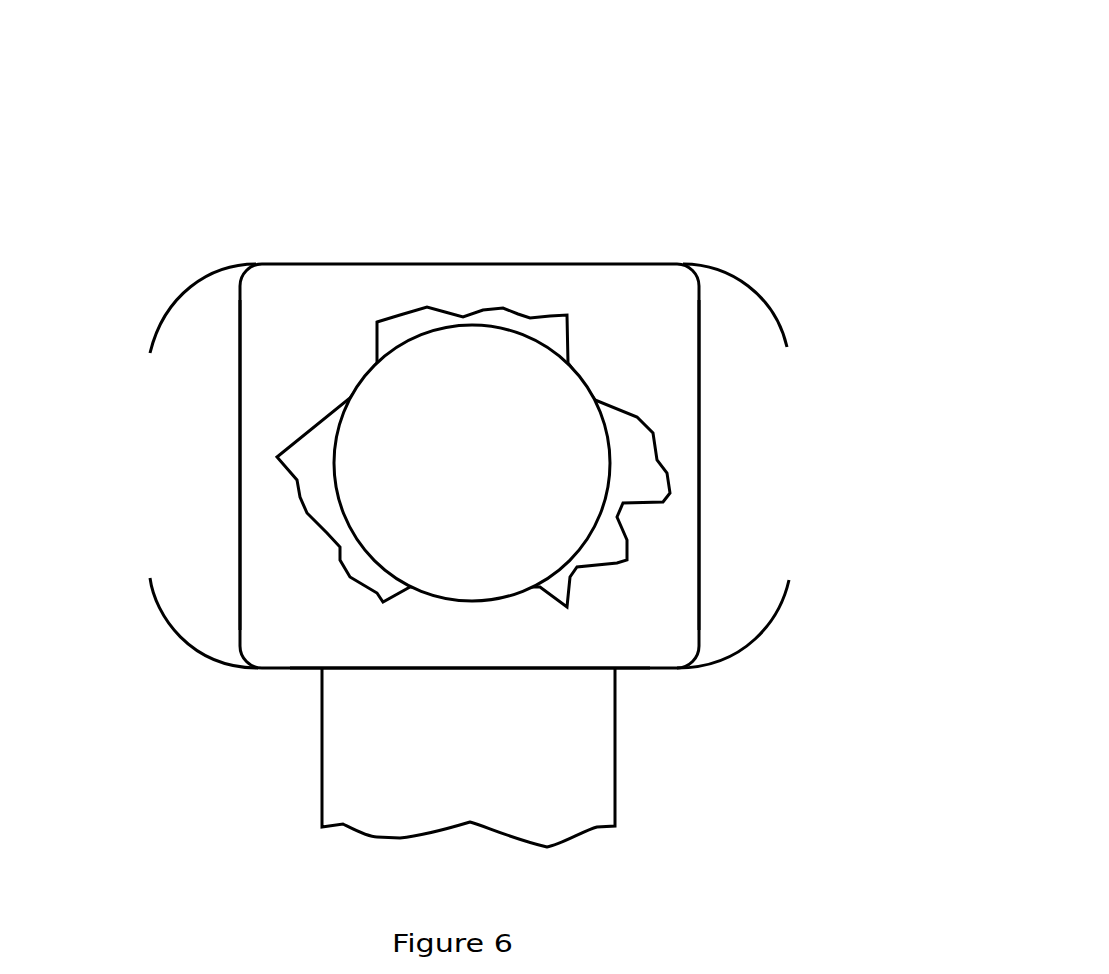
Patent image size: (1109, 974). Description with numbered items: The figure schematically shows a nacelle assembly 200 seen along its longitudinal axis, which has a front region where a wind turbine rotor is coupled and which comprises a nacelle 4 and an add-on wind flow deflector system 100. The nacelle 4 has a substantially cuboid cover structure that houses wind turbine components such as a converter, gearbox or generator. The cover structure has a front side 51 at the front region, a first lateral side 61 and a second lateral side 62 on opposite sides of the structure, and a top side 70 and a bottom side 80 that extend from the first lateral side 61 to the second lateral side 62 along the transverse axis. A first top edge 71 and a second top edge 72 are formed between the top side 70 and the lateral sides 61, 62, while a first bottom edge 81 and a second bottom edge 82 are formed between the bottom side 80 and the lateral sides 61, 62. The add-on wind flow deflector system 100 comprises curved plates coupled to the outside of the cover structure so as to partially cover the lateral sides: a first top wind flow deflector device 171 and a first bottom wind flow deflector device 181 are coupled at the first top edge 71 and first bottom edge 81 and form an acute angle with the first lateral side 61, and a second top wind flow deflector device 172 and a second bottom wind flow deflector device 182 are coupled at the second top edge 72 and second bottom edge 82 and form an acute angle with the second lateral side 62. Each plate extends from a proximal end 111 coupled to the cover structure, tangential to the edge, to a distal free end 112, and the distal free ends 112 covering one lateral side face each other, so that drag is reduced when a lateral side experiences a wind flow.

The nacelle 4 is at (495, 728).
The front side 51 is at (420, 657).
The first lateral side 61 is at (240, 518).
The second lateral side 62 is at (702, 478).
The top side 70 is at (460, 263).
The first top edge 71 is at (278, 287).
The second top edge 72 is at (676, 293).
The bottom side 80 is at (440, 670).
The first bottom edge 81 is at (273, 640).
The second bottom edge 82 is at (665, 648).
The add-on wind flow deflector system 100 is at (110, 264).
The proximal end 111 is at (700, 268).
The distal free end 112 is at (787, 347).
The first top wind flow deflector device 171 is at (174, 298).
The second top wind flow deflector device 172 is at (738, 272).
The first bottom wind flow deflector device 181 is at (158, 613).
The second bottom wind flow deflector device 182 is at (765, 636).
The nacelle assembly 200 is at (492, 115).